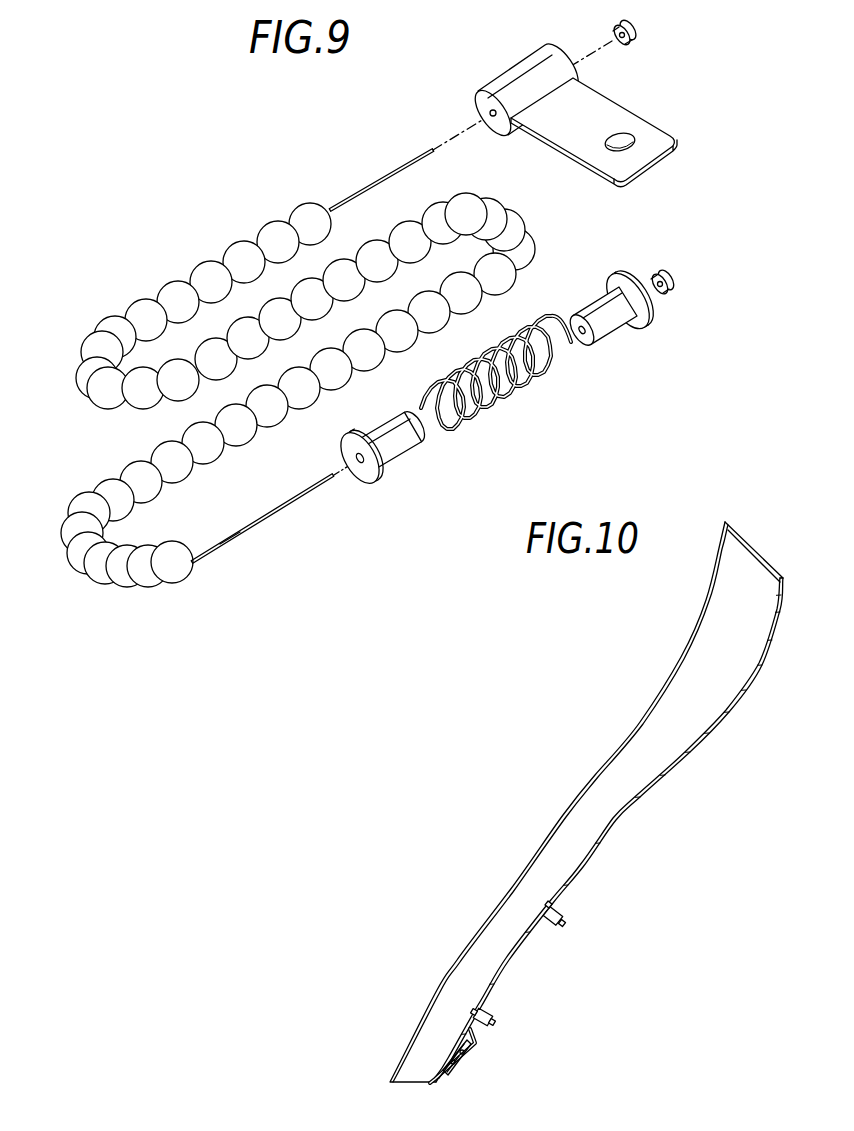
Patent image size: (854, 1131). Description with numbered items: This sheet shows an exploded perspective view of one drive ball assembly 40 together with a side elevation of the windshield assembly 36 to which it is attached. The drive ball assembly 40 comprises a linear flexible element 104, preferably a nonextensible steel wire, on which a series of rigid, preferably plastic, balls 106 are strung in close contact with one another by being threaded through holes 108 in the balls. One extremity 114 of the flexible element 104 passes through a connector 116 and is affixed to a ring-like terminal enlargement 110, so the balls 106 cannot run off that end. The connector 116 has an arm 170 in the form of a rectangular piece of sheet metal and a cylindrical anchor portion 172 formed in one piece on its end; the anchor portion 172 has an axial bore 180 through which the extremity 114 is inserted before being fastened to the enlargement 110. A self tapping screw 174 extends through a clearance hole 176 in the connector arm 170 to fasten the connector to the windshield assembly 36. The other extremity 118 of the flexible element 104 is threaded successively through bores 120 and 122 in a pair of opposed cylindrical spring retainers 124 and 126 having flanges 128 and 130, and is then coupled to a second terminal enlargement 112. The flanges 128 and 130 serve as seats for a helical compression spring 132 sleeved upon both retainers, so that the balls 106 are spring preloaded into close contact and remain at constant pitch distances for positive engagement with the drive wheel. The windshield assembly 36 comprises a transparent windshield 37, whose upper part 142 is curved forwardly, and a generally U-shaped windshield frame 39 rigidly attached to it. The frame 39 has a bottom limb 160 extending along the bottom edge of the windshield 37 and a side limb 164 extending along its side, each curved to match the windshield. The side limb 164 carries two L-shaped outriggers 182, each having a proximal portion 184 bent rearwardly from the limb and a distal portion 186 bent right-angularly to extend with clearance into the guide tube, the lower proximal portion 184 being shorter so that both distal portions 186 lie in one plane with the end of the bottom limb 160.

In FIG. 10, the windshield assembly 36 is at (632, 718).
In FIG. 10, the windshield 37 is at (573, 808).
In FIG. 10, the windshield frame 39 is at (522, 965).
In FIG. 9, the drive ball assembly 40 is at (207, 225).
In FIG. 9, the linear flexible element 104 is at (227, 545).
In FIG. 9, the balls 106 is at (505, 268).
In FIG. 9, the holes 108 is at (195, 568).
In FIG. 9, the terminal enlargement 110 is at (641, 37).
In FIG. 9, the terminal enlargement 112 is at (675, 280).
In FIG. 9, the extremity of flexible element 114 is at (377, 185).
In FIG. 9, the connector 116 is at (625, 102).
In FIG. 10, the connector 116 is at (438, 1087).
In FIG. 9, the other extremity of flexible element 118 is at (258, 525).
In FIG. 9, the bore 120 is at (360, 462).
In FIG. 9, the bore 122 is at (583, 337).
In FIG. 9, the spring retainer 124 is at (408, 452).
In FIG. 9, the spring retainer 126 is at (615, 335).
In FIG. 9, the flange 128 is at (342, 448).
In FIG. 9, the flange 130 is at (650, 313).
In FIG. 9, the helical compression spring 132 is at (500, 415).
In FIG. 10, the upper part of windshield 142 is at (740, 560).
In FIG. 10, the bottom limb 160 is at (457, 1060).
In FIG. 10, the side limb 164 is at (507, 982).
In FIG. 9, the connector arm 170 is at (565, 137).
In FIG. 10, the connector arm 170 is at (453, 1047).
In FIG. 9, the anchor portion 172 is at (512, 72).
In FIG. 10, the self tapping screw 174 is at (450, 1060).
In FIG. 9, the clearance hole 176 is at (637, 147).
In FIG. 9, the bore 180 is at (487, 113).
In FIG. 10, the outrigger 182 is at (573, 922).
In FIG. 10, the proximal portion 184 is at (558, 913).
In FIG. 10, the distal portion 186 is at (563, 927).